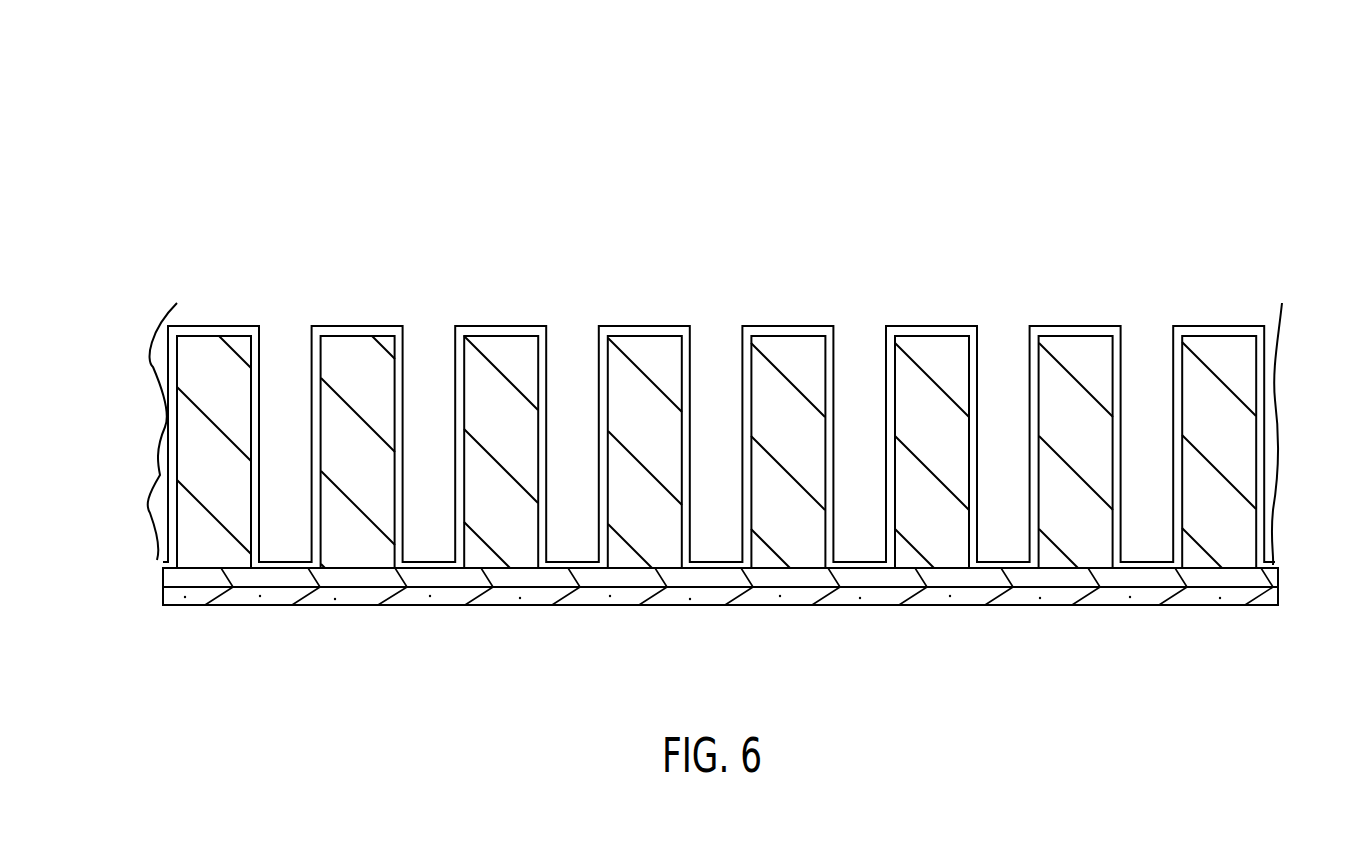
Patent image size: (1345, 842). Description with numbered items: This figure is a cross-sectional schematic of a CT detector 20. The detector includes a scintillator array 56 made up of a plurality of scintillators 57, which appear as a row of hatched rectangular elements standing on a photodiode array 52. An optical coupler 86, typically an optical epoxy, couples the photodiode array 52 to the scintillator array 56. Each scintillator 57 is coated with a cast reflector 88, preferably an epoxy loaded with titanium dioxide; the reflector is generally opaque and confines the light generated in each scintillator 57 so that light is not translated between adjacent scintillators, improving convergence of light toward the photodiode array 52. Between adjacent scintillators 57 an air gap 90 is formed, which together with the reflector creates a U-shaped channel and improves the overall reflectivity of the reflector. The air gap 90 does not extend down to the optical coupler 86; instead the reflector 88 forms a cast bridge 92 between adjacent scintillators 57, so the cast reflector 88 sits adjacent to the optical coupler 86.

The CT detector 20 is at (1100, 118).
The photodiode array 52 is at (1180, 597).
The scintillator array 56 is at (133, 385).
The scintillator 57 is at (228, 345).
The optical coupler 86 is at (1273, 577).
The cast reflector 88 is at (192, 333).
The air gap 90 is at (296, 316).
The cast bridge 92 is at (288, 562).